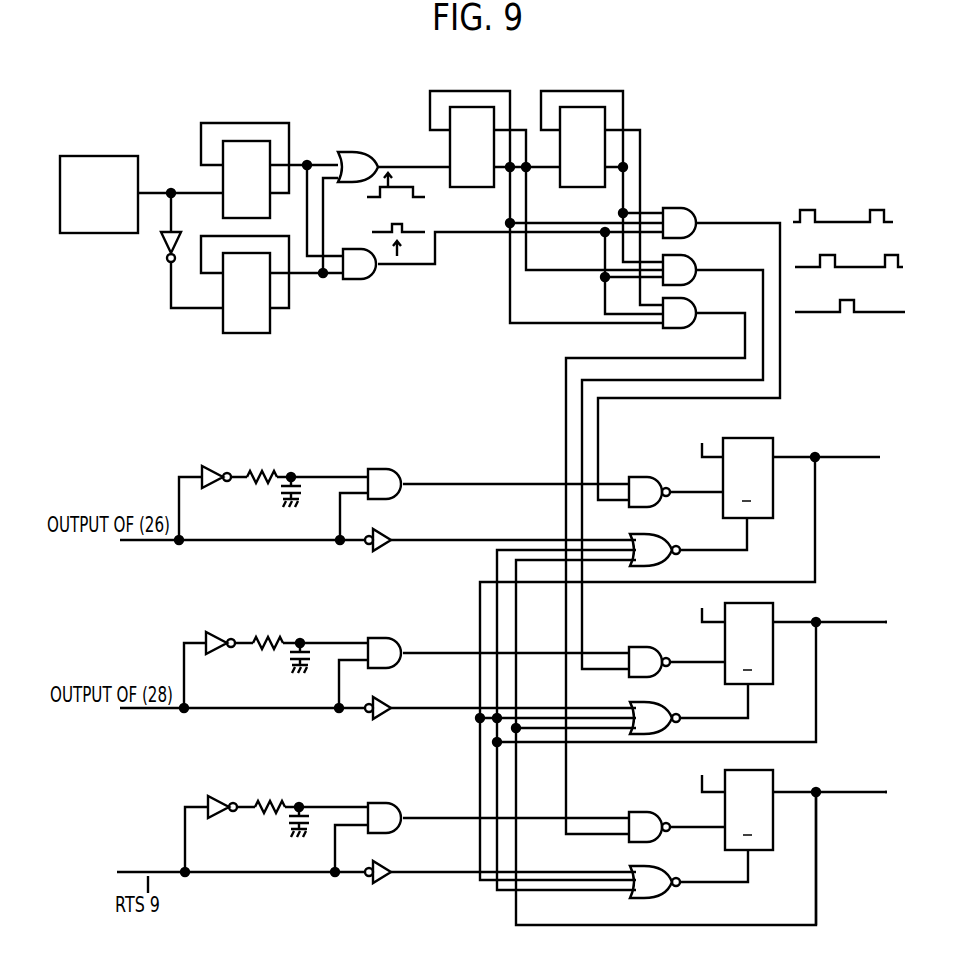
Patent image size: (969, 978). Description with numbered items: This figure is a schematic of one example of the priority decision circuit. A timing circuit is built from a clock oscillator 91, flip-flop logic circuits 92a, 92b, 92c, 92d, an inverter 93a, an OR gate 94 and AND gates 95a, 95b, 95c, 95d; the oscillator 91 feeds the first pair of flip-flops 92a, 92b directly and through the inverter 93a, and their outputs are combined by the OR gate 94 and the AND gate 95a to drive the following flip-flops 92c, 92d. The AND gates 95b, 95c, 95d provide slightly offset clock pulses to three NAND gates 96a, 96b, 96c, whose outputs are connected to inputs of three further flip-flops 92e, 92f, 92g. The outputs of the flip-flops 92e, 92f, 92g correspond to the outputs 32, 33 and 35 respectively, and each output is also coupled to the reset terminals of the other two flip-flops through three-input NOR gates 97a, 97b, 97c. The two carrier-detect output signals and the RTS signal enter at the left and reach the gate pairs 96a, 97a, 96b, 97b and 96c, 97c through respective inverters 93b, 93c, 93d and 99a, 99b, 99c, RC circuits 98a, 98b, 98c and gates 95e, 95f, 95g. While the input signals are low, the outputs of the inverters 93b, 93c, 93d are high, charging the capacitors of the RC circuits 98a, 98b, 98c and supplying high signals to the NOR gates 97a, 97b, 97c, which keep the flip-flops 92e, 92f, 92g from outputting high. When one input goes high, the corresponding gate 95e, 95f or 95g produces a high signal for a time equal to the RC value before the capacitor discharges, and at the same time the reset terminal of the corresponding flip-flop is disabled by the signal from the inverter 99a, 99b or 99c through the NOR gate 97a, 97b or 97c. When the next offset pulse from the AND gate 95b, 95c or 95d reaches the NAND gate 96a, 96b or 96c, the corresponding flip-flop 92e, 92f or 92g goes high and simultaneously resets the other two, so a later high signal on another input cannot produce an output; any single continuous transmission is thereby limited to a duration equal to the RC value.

The clock oscillator 91 is at (110, 156).
The flip-flop logic circuit 92a is at (227, 140).
The flip-flop logic circuit 92b is at (254, 334).
The flip-flop logic circuit 92c is at (450, 144).
The flip-flop logic circuit 92d is at (612, 118).
The flip-flop 92e is at (792, 428).
The flip-flop 92f is at (776, 612).
The flip-flop 92g is at (776, 788).
The inverter 93a is at (163, 250).
The inverter 93b is at (208, 466).
The inverter 93c is at (212, 634).
The inverter 93d is at (214, 798).
The OR gate 94 is at (347, 153).
The AND gate 95a is at (366, 281).
The AND gate 95b is at (686, 208).
The AND gate 95c is at (700, 257).
The AND gate 95d is at (700, 299).
The AND gate 95e is at (387, 466).
The AND gate 95f is at (387, 636).
The AND gate 95g is at (387, 802).
The NAND gate 96a is at (640, 477).
The NAND gate 96b is at (646, 647).
The NAND gate 96c is at (642, 813).
The three-input NOR gate 97a is at (655, 535).
The three-input NOR gate 97b is at (660, 703).
The three-input NOR gate 97c is at (660, 867).
The RC circuit 98a is at (268, 464).
The RC circuit 98b is at (270, 632).
The RC circuit 98c is at (268, 800).
The inverter 99a is at (381, 544).
The inverter 99b is at (383, 712).
The inverter 99c is at (383, 884).
The output 32 is at (857, 456).
The output 33 is at (859, 621).
The output 35 is at (858, 791).